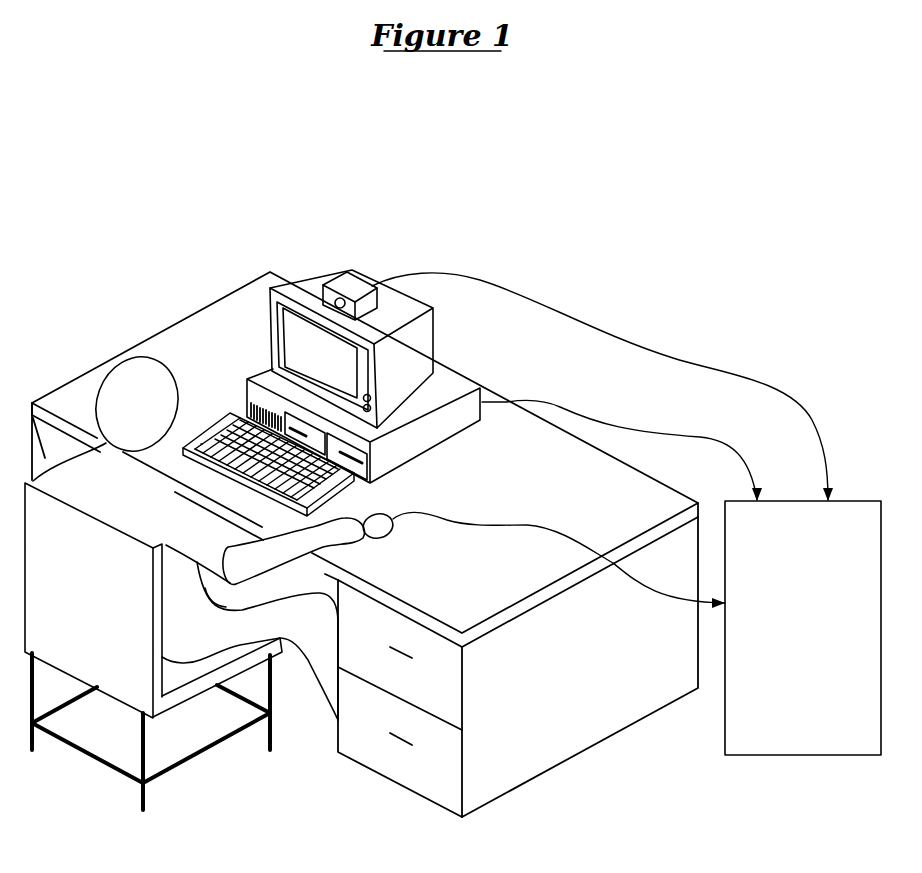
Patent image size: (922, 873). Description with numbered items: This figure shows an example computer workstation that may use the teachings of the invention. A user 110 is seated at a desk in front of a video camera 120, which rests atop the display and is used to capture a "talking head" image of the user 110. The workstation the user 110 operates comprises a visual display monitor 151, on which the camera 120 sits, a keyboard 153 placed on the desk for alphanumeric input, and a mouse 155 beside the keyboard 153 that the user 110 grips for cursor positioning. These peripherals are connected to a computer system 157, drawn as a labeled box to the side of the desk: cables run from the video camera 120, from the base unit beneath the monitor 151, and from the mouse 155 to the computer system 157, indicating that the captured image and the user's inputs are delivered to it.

The user 110 is at (321, 682).
The video camera 120 is at (360, 274).
The visual display monitor 151 is at (351, 349).
The keyboard 153 is at (215, 418).
The mouse 155 is at (393, 540).
The computer system 157 is at (803, 628).